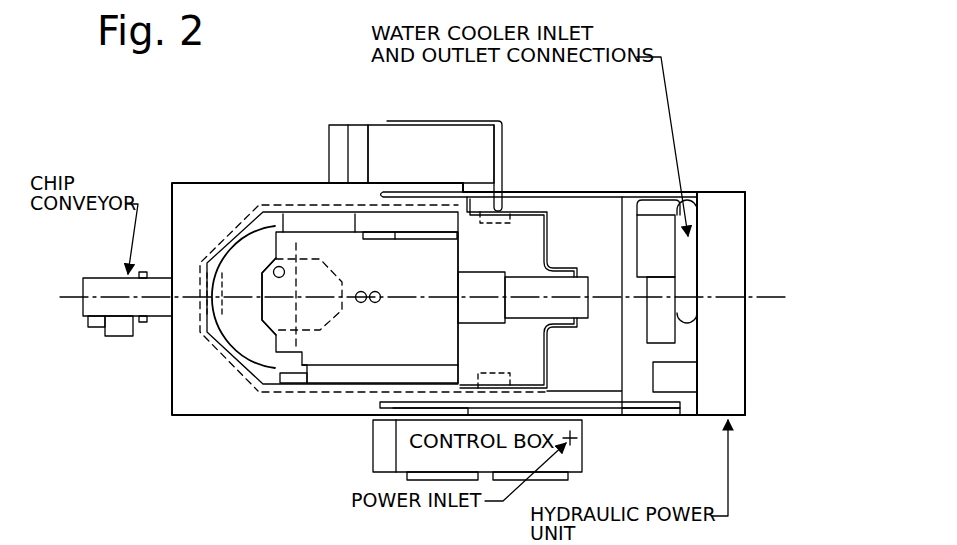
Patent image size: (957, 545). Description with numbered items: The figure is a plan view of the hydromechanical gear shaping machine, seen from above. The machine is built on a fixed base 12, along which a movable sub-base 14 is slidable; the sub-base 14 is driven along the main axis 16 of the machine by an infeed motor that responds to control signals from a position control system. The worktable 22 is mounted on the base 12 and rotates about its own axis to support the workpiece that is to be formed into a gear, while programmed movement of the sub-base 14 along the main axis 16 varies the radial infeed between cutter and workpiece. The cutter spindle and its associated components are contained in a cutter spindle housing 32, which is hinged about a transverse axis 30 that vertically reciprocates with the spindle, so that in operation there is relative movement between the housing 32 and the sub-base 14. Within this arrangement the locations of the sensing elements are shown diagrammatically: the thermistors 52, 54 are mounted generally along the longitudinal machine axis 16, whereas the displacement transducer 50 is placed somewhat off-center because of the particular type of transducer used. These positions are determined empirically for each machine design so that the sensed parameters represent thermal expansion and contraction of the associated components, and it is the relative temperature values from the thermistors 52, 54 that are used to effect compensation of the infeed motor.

The fixed base 12 is at (180, 377).
The movable sub-base 14 is at (433, 339).
The main axis 16 is at (186, 296).
The worktable 22 is at (253, 343).
The transverse axis 30 is at (298, 313).
The cutter spindle housing 32 is at (262, 280).
The displacement transducer 50 is at (283, 269).
The thermistor 52 is at (380, 292).
The thermistor 54 is at (361, 291).